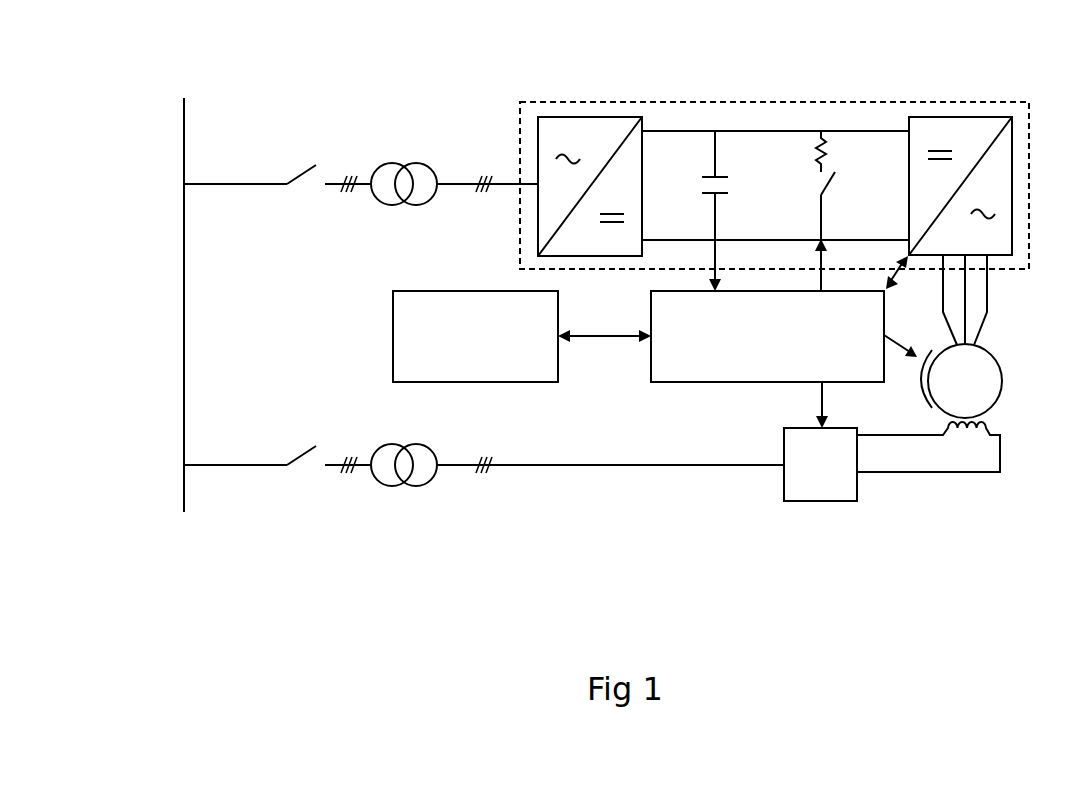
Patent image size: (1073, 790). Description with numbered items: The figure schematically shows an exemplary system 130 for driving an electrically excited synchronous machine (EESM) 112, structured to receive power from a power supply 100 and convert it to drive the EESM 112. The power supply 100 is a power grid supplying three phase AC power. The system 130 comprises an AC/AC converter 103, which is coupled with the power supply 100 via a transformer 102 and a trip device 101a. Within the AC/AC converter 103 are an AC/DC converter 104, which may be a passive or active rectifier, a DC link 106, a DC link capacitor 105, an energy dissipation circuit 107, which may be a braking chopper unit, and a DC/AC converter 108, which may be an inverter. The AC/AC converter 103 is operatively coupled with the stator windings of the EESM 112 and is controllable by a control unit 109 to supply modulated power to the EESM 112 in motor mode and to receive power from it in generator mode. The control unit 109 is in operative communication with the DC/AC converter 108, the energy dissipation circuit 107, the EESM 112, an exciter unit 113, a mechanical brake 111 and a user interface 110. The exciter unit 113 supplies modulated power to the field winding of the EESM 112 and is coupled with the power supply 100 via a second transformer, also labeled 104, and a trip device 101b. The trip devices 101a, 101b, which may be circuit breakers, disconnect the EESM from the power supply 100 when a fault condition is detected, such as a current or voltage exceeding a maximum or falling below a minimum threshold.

The system 130 is at (281, 54).
The power supply 100 is at (184, 116).
The trip device 101a is at (291, 186).
The trip device 101b is at (291, 467).
The transformer 102 is at (395, 163).
The AC/AC converter 103 is at (521, 102).
The AC/DC converter 104 is at (600, 117).
The DC link capacitor 105 is at (713, 131).
The DC link 106 is at (767, 131).
The energy dissipation circuit 107 is at (821, 131).
The DC/AC converter 108 is at (978, 117).
The control unit 109 is at (730, 382).
The user interface 110 is at (543, 382).
The mechanical brake 111 is at (918, 394).
The electrically excited synchronous machine 112 is at (1002, 390).
The exciter unit 113 is at (822, 501).